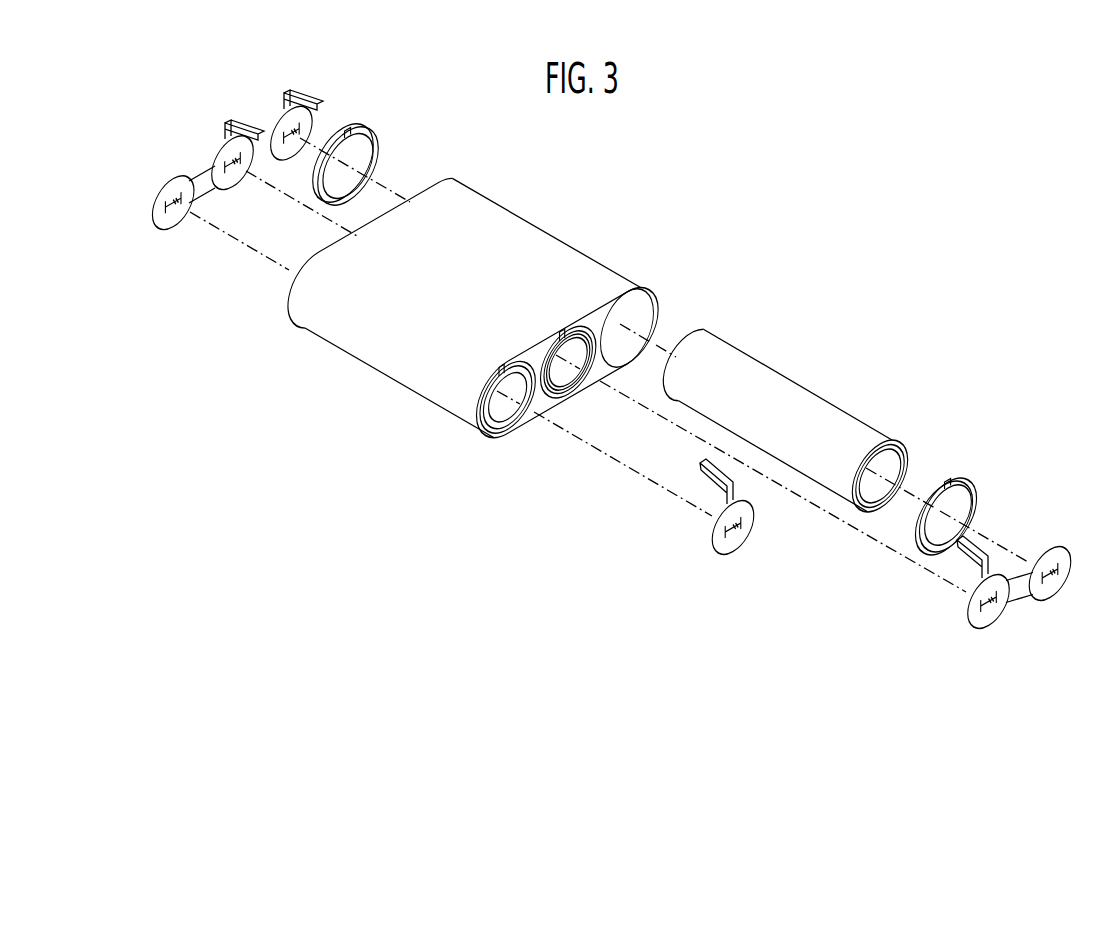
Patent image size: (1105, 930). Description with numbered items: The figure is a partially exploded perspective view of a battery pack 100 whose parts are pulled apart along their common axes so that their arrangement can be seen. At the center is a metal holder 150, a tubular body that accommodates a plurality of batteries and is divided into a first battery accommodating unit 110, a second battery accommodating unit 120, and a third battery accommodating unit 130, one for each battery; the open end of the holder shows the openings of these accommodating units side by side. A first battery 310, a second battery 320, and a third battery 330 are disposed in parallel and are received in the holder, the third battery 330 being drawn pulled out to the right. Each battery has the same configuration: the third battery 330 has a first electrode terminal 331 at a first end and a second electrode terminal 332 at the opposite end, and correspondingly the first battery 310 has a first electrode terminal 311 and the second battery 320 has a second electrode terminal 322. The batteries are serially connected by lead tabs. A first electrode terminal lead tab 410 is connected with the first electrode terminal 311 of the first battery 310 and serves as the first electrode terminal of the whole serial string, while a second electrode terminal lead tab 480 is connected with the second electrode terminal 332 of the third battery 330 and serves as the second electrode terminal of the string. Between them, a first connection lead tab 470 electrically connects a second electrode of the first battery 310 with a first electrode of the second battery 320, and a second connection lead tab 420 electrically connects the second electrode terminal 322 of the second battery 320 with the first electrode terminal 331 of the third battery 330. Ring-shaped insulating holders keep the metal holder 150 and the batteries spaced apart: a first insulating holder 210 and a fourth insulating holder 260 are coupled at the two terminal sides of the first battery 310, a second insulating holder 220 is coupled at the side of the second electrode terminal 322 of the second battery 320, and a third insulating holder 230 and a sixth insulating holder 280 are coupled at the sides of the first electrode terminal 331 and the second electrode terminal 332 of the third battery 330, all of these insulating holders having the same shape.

The battery pack 100 is at (750, 174).
The first battery accommodating unit 110 is at (483, 402).
The second battery accommodating unit 120 is at (545, 400).
The third battery accommodating unit 130 is at (652, 292).
The metal holder 150 is at (402, 373).
The first insulating holder 210 is at (497, 438).
The second insulating holder 220 is at (557, 406).
The third insulating holder 230 is at (977, 486).
The fourth insulating holder 260 is at (294, 289).
The sixth insulating holder 280 is at (381, 134).
The first battery 310 is at (492, 401).
The first electrode terminal of the first battery 311 is at (498, 415).
The second battery 320 is at (576, 374).
The second electrode terminal of the second battery 322 is at (570, 392).
The third battery 330 is at (826, 395).
The first electrode terminal of the third battery 331 is at (892, 470).
The second electrode terminal of the third battery 332 is at (677, 346).
The first electrode terminal lead tab 410 is at (719, 555).
The second connection lead tab 420 is at (985, 629).
The first connection lead tab 470 is at (166, 229).
The second electrode terminal lead tab 480 is at (285, 165).